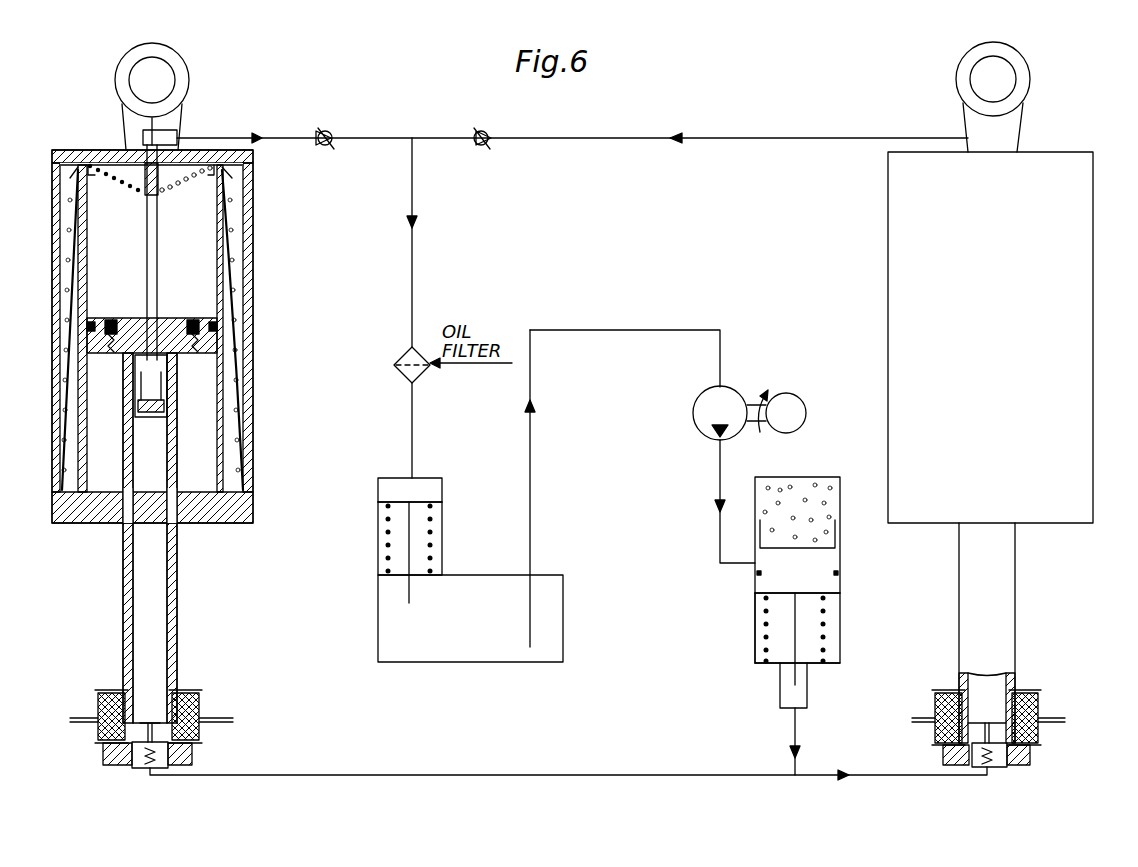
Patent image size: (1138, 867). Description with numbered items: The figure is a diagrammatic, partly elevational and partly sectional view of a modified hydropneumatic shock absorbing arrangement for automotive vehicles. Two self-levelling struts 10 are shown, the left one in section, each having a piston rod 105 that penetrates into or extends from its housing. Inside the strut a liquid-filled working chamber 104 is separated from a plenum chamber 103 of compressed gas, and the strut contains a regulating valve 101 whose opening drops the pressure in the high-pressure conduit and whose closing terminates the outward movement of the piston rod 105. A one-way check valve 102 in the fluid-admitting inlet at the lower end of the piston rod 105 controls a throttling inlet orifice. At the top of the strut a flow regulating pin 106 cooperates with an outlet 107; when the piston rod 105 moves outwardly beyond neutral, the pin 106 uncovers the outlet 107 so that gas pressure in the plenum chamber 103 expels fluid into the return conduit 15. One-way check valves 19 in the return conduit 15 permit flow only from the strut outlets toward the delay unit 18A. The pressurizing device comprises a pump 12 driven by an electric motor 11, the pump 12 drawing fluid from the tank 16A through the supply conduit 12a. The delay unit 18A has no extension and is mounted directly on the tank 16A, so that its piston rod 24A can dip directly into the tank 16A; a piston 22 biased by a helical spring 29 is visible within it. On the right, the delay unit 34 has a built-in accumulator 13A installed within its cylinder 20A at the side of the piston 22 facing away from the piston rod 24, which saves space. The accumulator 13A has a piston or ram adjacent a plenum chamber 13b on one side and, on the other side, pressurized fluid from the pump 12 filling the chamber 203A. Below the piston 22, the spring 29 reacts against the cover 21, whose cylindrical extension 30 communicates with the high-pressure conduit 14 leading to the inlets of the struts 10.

The strut 10 is at (888, 250).
The electric motor 11 is at (800, 404).
The pump 12 is at (706, 400).
The supply conduit 12a is at (592, 328).
The accumulator 13A is at (840, 497).
The plenum chamber 13b is at (792, 477).
The high-pressure conduit 14 is at (790, 745).
The return conduit 15 is at (362, 138).
The tank 16A is at (466, 662).
The delay unit 18A is at (442, 528).
The one-way check valve 19 is at (324, 148).
The cylinder 20A is at (842, 598).
The cover 21 is at (770, 665).
The piston 22 is at (418, 498).
The piston rod 24 is at (797, 623).
The piston rod 24A is at (411, 590).
The helical spring 29 is at (432, 549).
The cylindrical extension 30 is at (808, 690).
The delay unit 34 is at (752, 597).
The regulating valve 101 is at (158, 380).
The one-way check valve 102 is at (150, 723).
The plenum chamber 103 is at (232, 424).
The working chamber 104 is at (240, 226).
The piston rod 105 is at (177, 606).
The flow regulating pin 106 is at (141, 193).
The outlet 107 is at (172, 130).
The chamber 203A is at (825, 560).